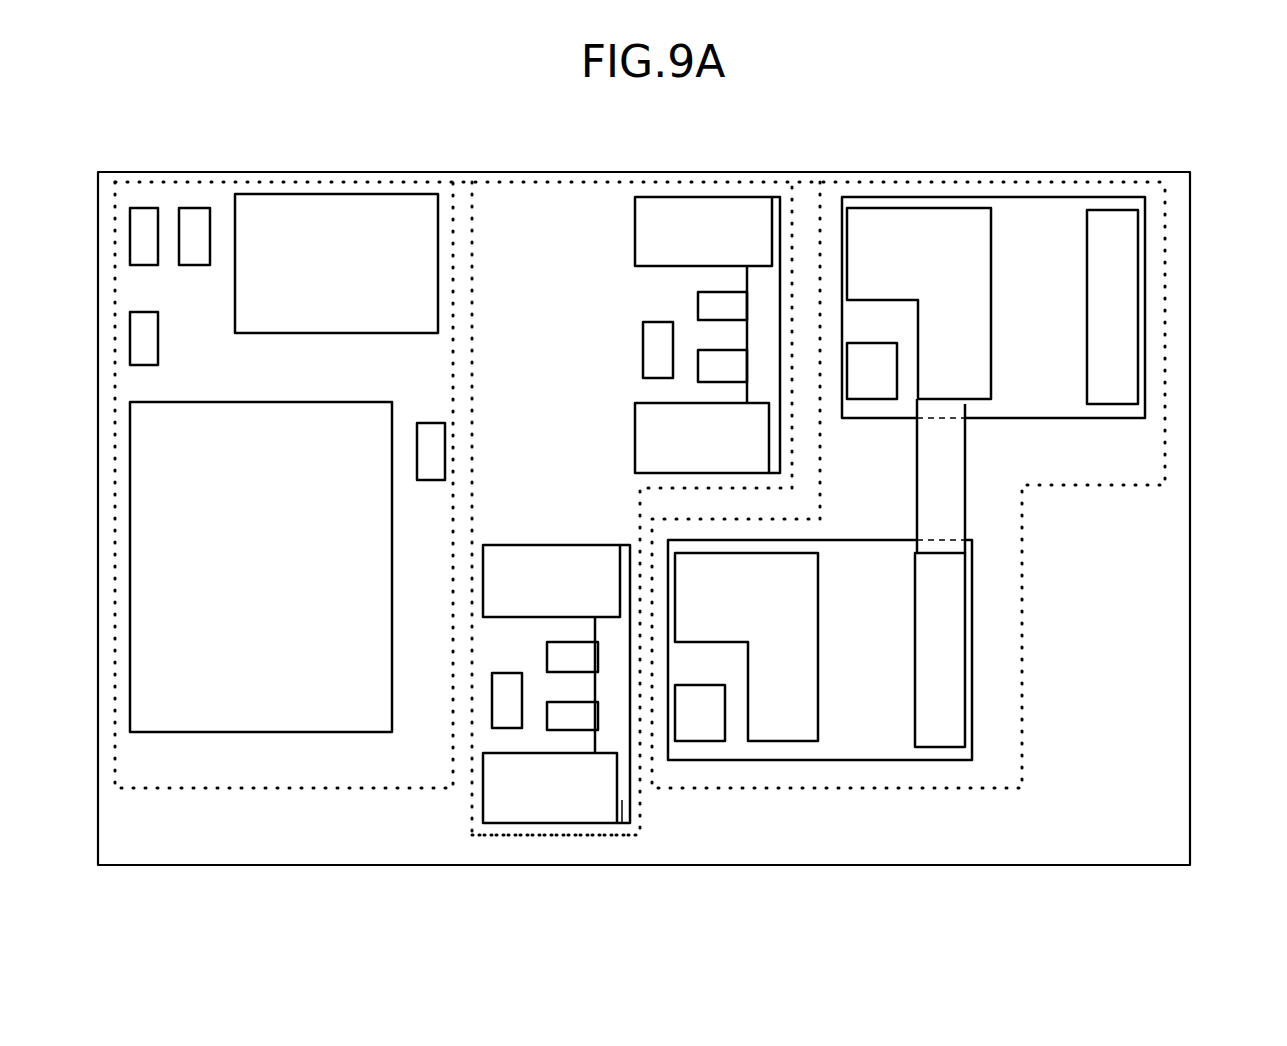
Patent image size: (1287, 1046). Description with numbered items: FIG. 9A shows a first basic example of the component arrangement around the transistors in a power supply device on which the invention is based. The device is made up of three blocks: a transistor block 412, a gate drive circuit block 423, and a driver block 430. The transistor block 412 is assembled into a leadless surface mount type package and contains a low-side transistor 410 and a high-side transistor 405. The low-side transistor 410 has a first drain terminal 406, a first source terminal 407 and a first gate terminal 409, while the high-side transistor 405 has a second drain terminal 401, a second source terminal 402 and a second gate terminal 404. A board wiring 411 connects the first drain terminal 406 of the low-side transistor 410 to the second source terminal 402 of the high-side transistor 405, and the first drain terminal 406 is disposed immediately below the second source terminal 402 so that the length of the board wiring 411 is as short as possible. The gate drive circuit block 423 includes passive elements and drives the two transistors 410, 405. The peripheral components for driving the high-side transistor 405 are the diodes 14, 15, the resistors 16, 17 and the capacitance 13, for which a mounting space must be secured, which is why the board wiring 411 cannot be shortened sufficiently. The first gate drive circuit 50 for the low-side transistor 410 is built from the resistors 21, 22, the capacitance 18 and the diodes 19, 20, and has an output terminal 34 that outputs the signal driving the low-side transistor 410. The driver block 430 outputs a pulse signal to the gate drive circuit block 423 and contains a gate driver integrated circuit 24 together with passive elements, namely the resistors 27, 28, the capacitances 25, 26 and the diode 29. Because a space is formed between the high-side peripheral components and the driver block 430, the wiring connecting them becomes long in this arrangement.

The capacitance 13 is at (661, 352).
The diode 14 is at (665, 440).
The diode 15 is at (659, 227).
The resistor 16 is at (711, 367).
The resistor 17 is at (729, 305).
The capacitance 18 is at (507, 700).
The diode 19 is at (529, 797).
The diode 20 is at (557, 563).
The resistor 21 is at (585, 713).
The resistor 22 is at (560, 652).
The gate driver integrated circuit 24 is at (162, 563).
The capacitance 25 is at (145, 345).
The capacitance 26 is at (430, 451).
The resistor 27 is at (143, 228).
The resistor 28 is at (193, 228).
The diode 29 is at (330, 228).
The output terminal 34 is at (622, 800).
The first gate drive circuit 50 is at (481, 830).
The second drain terminal 401 is at (1112, 303).
The second source terminal 402 is at (914, 238).
The second gate terminal 404 is at (875, 365).
The high-side transistor 405 is at (1036, 195).
The first drain terminal 406 is at (945, 638).
The first source terminal 407 is at (787, 700).
The first gate terminal 409 is at (702, 712).
The low-side transistor 410 is at (865, 762).
The board wiring 411 is at (945, 455).
The transistor block 412 is at (1022, 690).
The gate drive circuit block 423 is at (577, 838).
The driver block 430 is at (276, 790).